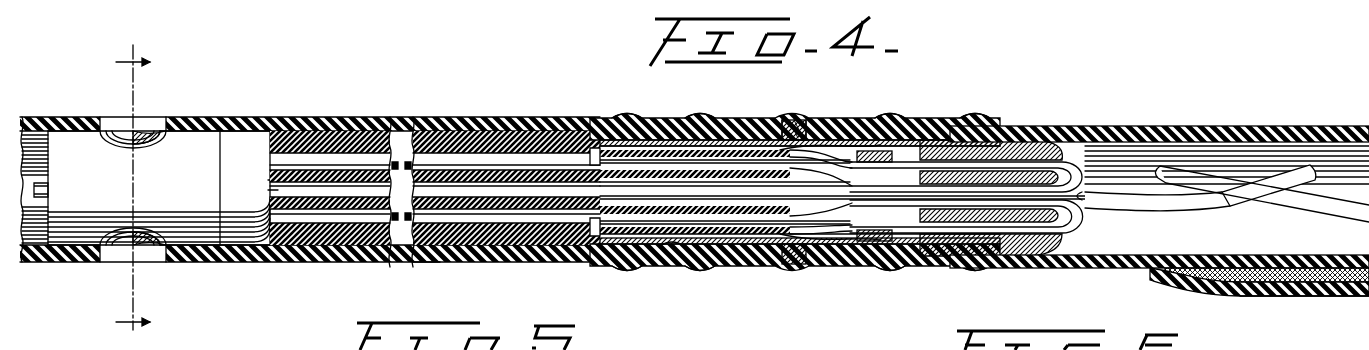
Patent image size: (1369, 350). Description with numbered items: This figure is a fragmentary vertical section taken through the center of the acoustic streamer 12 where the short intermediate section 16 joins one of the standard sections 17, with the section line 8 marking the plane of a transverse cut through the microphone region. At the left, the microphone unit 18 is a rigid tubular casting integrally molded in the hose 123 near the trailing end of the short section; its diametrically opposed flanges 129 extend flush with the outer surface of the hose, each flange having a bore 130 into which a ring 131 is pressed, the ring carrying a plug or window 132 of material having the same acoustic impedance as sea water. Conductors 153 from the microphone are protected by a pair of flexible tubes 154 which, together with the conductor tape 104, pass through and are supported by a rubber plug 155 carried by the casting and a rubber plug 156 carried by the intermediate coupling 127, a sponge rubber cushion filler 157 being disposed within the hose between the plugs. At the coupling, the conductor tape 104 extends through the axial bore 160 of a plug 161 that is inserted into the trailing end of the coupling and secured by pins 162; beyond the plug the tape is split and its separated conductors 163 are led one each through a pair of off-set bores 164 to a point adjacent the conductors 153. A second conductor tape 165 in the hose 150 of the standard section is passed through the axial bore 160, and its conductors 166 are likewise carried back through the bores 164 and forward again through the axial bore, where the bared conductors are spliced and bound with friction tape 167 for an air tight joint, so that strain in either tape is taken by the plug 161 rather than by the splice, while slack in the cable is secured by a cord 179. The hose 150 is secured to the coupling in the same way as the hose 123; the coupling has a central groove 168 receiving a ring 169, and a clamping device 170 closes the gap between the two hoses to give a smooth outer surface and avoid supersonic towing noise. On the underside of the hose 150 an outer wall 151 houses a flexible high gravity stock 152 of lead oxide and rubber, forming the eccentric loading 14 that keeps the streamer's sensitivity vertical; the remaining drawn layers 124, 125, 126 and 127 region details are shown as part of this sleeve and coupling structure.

The section line 8- 8 is at (133, 193).
The acoustic streamer 12 is at (31, 116).
The eccentric loading 14 is at (1296, 297).
The short intermediate section 16 is at (58, 263).
The standard section 17 is at (1081, 268).
The microphone unit 18 is at (159, 188).
The conductor tape 104 is at (44, 187).
The hose 123 is at (425, 263).
The inner sleeve 124 is at (668, 122).
The ring bump 125 is at (714, 120).
The corrugation ring 126 is at (636, 117).
The intermediate coupling 127 is at (672, 258).
The flange 129 is at (106, 128).
The bore 130 is at (160, 121).
The ring 131 is at (115, 121).
The plug or window 132 is at (141, 121).
The hose 150 is at (1114, 126).
The outer wall 151 is at (1230, 296).
The high gravity stock 152 is at (1338, 297).
The conductor 153 is at (810, 264).
The flexible tube 154 is at (323, 157).
The rubber plug 155 is at (244, 138).
The rubber plug 156 is at (585, 138).
The cushion filler 157 is at (398, 132).
The axial bore 160 is at (998, 175).
The plug 161 is at (1058, 246).
The pin 162 is at (962, 100).
The conductor 163 is at (905, 160).
The off-set bore 164 is at (1022, 158).
The second conductor tape 165 is at (1130, 203).
The conductor 166 is at (925, 160).
The friction tape 167 is at (868, 150).
The groove 168 is at (812, 121).
The ring 169 is at (800, 121).
The clamping device 170 is at (785, 122).
The cord 179 is at (1215, 204).